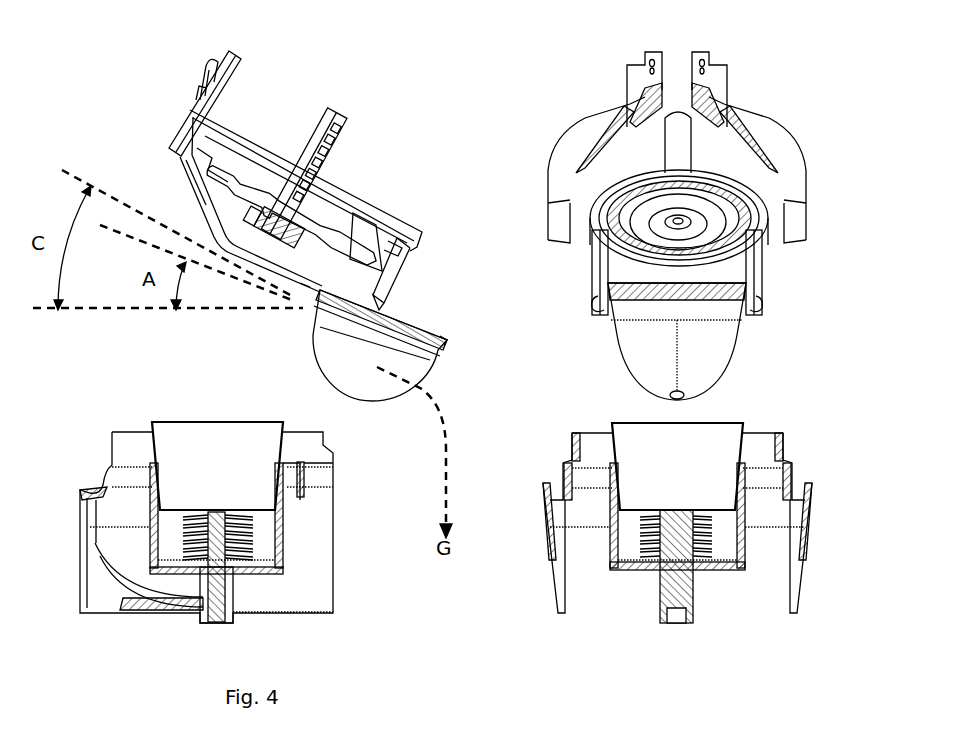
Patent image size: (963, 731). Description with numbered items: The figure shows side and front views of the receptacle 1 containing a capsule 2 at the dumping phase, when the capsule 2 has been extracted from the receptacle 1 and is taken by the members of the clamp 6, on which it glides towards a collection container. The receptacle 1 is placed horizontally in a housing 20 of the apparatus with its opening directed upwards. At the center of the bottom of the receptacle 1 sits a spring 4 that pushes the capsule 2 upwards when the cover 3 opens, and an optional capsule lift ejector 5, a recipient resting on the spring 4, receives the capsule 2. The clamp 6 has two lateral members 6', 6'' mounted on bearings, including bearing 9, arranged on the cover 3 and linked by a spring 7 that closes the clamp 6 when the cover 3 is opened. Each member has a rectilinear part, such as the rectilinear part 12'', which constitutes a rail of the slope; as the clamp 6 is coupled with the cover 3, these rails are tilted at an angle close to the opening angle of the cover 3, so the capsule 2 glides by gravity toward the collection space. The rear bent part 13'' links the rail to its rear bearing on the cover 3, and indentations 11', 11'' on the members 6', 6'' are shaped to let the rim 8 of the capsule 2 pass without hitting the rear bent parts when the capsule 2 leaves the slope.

The receptacle 1 is at (290, 539).
The capsule 2 is at (327, 352).
The cover 3 is at (253, 128).
The spring 4 is at (255, 528).
The capsule lift ejector 5 is at (198, 444).
The clamp 6 is at (177, 50).
The first lateral member of the clamp 6' is at (629, 272).
The second lateral member of the clamp 6'' is at (480, 237).
The spring 7 is at (199, 91).
The rim 8 is at (449, 344).
The rack pin 9 is at (235, 46).
The indentation 11' is at (555, 316).
The indentation 11'' is at (610, 308).
The rectilinear part 12'' is at (271, 315).
The rear bent part 13'' is at (428, 255).
The housing 20 is at (306, 585).